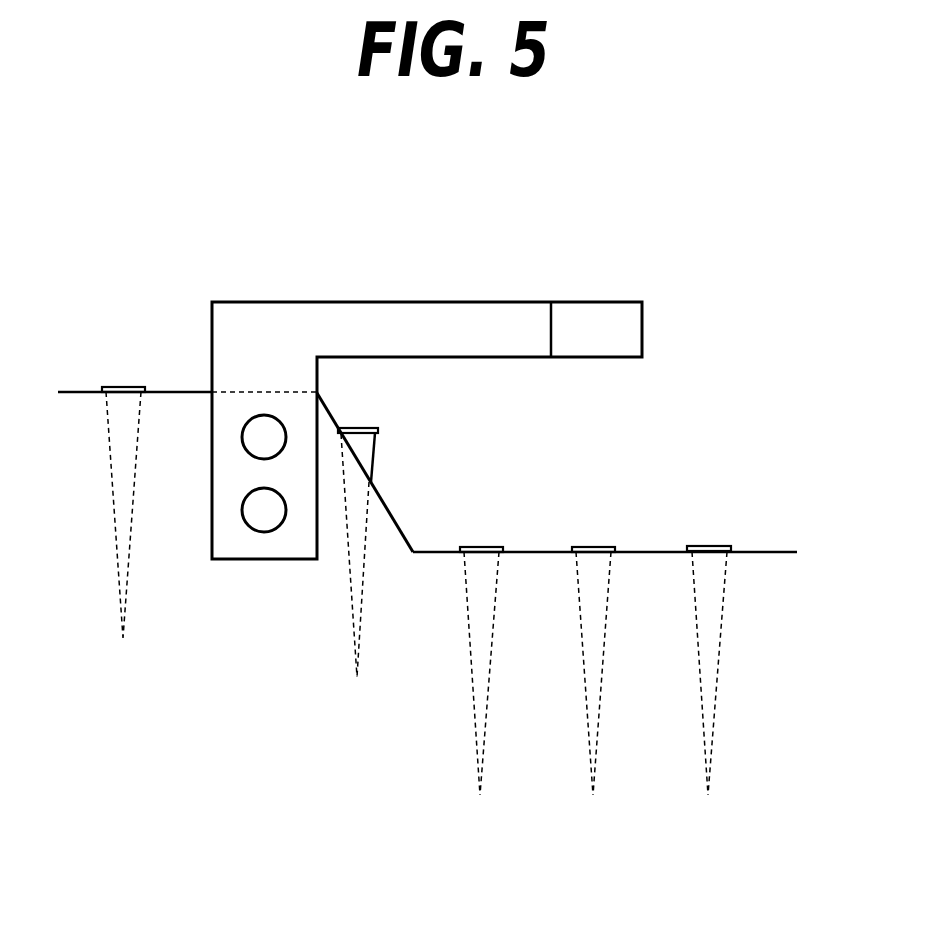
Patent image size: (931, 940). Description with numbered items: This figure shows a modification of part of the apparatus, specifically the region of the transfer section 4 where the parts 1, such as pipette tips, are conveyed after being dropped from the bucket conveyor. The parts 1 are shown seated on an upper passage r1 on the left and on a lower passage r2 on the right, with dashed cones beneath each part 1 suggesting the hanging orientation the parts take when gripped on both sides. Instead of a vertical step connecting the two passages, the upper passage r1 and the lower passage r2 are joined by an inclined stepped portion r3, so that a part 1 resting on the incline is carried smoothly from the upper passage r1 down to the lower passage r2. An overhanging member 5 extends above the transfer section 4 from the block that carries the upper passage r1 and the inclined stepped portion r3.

The parts 1 is at (105, 386).
The transfer section 4 is at (277, 648).
The arm 5 is at (467, 300).
The upper passage r1 is at (183, 391).
The lower passage r2 is at (755, 551).
The inclined stepped portion r3 is at (385, 499).